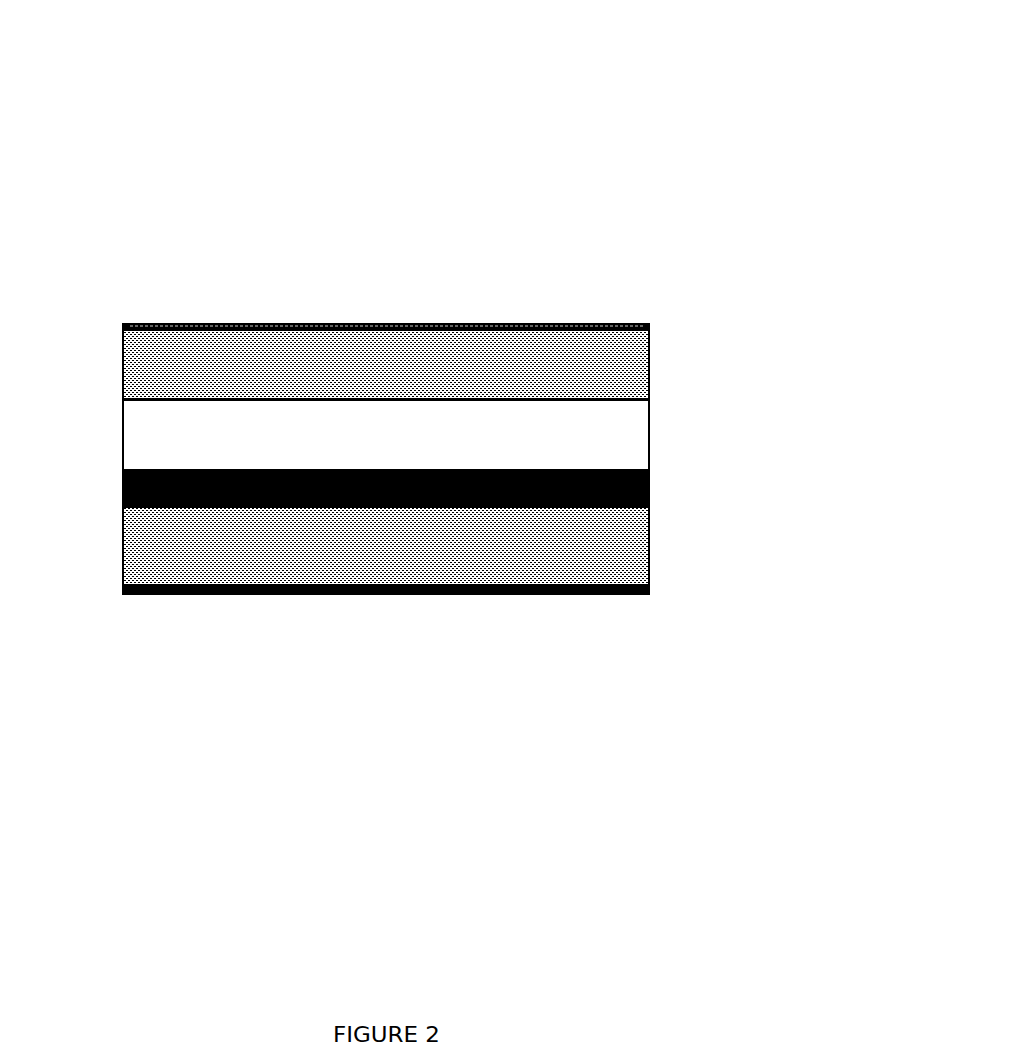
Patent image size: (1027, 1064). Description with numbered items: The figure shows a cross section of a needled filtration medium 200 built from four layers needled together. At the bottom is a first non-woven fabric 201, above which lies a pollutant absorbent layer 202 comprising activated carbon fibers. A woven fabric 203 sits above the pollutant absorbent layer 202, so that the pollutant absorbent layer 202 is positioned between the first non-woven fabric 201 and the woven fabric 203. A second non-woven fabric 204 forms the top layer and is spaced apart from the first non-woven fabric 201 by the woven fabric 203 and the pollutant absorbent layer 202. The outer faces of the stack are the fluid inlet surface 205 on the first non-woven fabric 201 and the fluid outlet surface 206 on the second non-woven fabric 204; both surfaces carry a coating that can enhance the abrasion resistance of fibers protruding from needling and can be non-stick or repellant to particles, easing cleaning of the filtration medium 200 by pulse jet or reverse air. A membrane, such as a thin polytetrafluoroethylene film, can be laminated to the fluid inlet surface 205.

The filtration medium 200 is at (158, 190).
The first non-woven fabric 201 is at (386, 546).
The pollutant absorbent layer 202 is at (650, 490).
The woven fabric 203 is at (386, 435).
The second non-woven fabric 204 is at (386, 366).
The fluid inlet surface 205 is at (592, 599).
The fluid outlet surface 206 is at (575, 323).